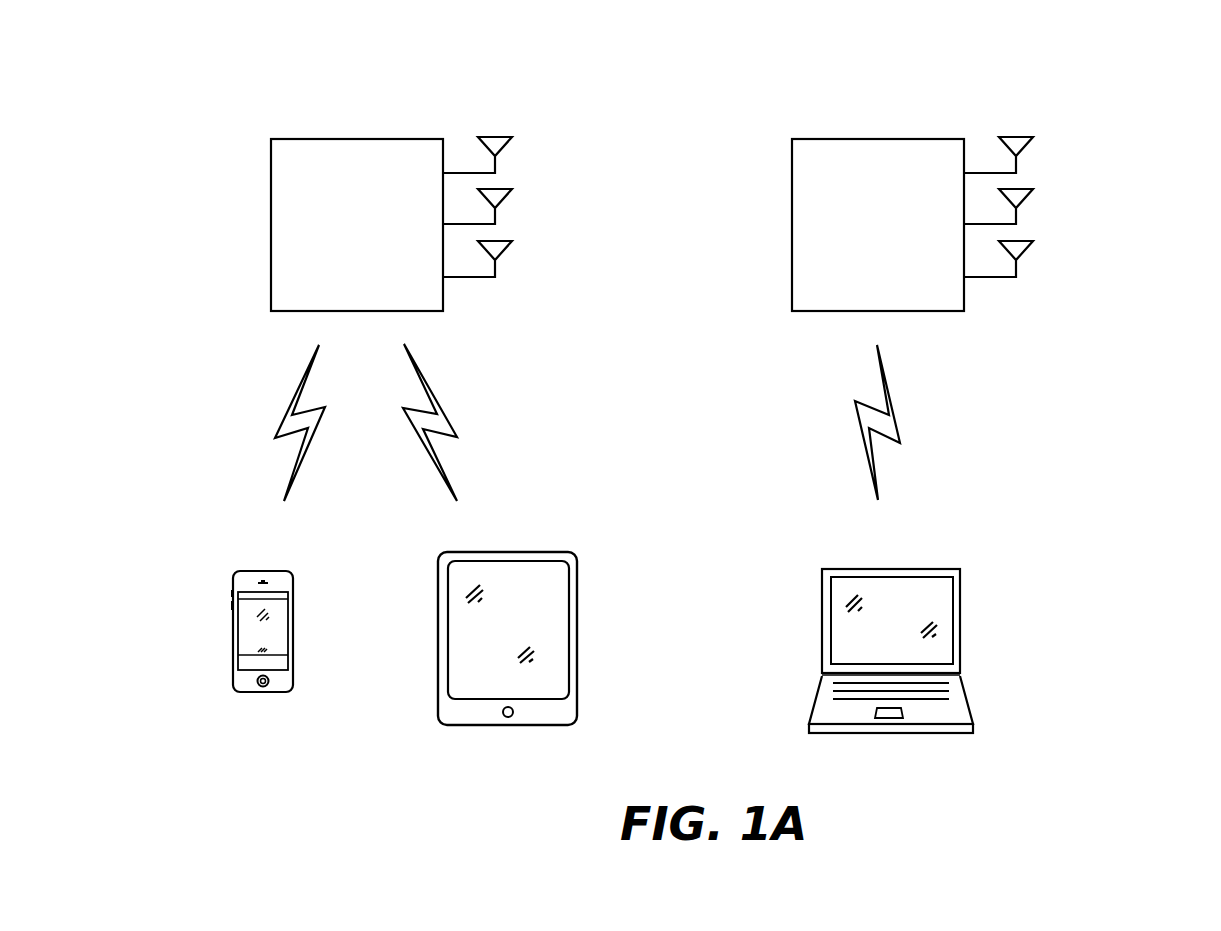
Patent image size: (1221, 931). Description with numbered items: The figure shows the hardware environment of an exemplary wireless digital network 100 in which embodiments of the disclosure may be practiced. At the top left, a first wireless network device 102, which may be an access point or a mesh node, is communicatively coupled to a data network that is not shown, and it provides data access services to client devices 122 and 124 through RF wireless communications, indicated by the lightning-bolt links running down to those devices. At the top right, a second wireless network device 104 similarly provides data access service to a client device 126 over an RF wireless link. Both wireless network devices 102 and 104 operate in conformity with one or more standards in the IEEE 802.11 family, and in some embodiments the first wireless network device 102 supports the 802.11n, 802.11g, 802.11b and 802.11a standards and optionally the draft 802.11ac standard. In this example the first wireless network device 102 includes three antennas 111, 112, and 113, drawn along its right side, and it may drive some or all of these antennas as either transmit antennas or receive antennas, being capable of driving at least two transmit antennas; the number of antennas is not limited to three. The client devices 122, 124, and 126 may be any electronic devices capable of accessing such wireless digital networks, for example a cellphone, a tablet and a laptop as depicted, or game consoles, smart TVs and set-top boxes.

The wireless digital network 100 is at (1097, 93).
The first wireless network device 102 is at (303, 138).
The second wireless network device 104 is at (826, 138).
The antenna 111 is at (512, 143).
The antenna 112 is at (512, 195).
The antenna 113 is at (512, 247).
The client device 122 is at (249, 692).
The client device 124 is at (503, 552).
The client device 126 is at (860, 569).